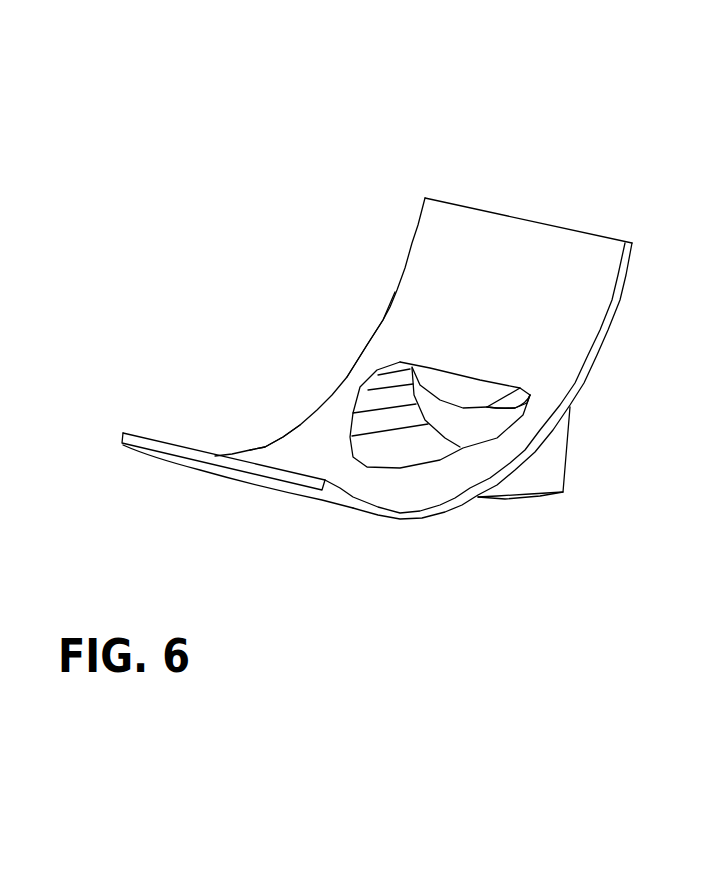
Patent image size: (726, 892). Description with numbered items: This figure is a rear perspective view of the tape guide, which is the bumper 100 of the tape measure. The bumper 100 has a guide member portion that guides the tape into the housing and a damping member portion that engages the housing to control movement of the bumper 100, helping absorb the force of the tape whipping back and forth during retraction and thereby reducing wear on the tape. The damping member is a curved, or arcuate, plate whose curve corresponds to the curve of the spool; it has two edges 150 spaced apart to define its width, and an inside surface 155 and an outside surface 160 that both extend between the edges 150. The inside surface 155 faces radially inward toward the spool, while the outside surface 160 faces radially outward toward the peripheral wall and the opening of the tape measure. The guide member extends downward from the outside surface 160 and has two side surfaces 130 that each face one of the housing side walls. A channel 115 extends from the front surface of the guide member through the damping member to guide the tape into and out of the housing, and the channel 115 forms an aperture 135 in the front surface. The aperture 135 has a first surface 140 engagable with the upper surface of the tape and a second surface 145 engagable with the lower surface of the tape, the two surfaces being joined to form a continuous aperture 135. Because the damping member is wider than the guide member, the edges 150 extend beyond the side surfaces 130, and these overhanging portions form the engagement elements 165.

The bumper 100 is at (404, 338).
The channel 115 is at (446, 416).
The side surfaces 130 is at (502, 485).
The aperture 135 is at (455, 447).
The first surface 140 is at (511, 404).
The second surface 145 is at (428, 456).
The edges 150 is at (418, 221).
The inside surface 155 is at (283, 447).
The outside surface 160 is at (227, 480).
The engagement elements 165 is at (367, 345).